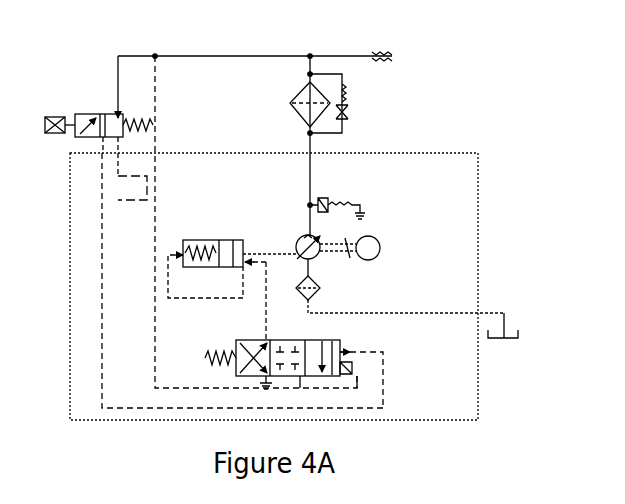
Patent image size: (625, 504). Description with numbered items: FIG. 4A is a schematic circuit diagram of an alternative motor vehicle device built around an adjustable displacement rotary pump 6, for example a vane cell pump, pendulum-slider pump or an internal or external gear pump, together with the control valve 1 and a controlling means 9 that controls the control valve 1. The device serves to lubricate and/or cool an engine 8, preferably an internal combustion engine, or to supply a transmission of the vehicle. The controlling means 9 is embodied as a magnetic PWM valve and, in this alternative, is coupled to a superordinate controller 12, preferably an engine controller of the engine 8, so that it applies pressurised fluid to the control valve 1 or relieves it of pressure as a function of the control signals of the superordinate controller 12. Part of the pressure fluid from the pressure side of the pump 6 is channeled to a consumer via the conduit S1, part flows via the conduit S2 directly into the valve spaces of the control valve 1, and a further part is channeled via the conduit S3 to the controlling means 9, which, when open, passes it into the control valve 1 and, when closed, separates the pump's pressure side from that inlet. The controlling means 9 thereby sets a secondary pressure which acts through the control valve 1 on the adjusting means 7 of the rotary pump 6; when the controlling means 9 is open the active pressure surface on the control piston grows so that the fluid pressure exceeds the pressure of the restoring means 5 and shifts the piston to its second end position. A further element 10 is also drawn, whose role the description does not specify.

The control valve 1 is at (318, 360).
The restoring means 5 is at (222, 345).
The adjustable displacement pump 6 is at (298, 234).
The adjusting means 7 is at (183, 240).
The engine 8 is at (72, 333).
The controlling means 9 is at (67, 132).
The tank 10 is at (512, 326).
The superordinate controller 12 is at (119, 190).
The conduit S1 is at (255, 42).
The conduit S2 is at (268, 231).
The conduit S3 is at (138, 87).